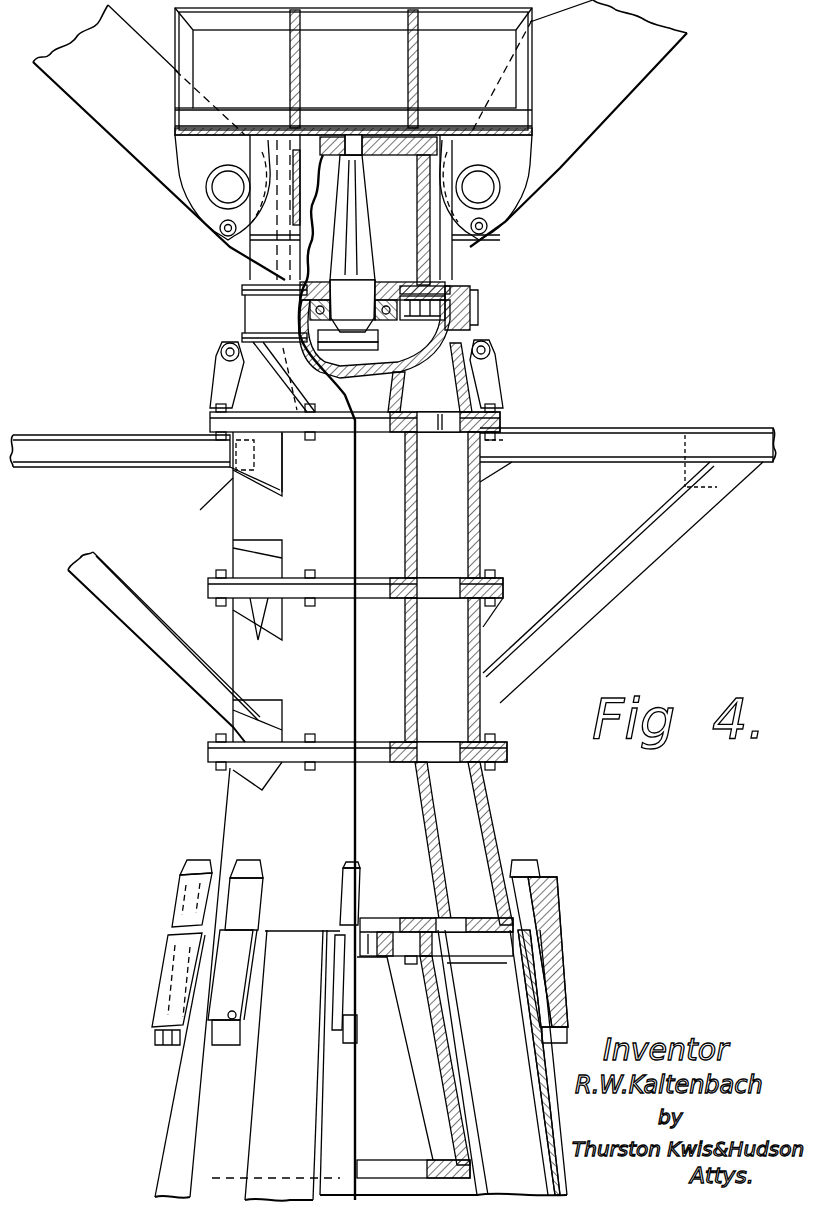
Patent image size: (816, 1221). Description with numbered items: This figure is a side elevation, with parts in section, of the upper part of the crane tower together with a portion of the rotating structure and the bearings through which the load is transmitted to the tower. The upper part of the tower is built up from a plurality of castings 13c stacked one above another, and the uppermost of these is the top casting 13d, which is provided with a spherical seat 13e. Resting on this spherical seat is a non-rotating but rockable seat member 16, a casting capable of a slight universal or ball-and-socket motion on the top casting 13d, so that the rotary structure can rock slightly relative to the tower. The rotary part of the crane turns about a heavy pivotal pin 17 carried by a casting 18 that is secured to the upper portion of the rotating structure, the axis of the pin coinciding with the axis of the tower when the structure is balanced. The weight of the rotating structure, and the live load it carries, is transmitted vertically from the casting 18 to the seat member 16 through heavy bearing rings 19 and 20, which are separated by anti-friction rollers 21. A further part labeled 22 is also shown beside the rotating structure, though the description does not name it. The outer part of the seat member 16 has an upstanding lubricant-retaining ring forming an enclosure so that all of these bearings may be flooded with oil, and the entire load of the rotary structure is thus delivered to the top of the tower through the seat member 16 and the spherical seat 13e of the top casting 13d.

The castings 13c is at (481, 498).
The top casting 13d is at (482, 366).
The spherical seat 13e is at (374, 341).
The seat member 16 is at (480, 330).
The pivotal pin 17 is at (365, 222).
The casting 18 is at (432, 263).
The bearing ring 19 is at (412, 285).
The bearing ring 20 is at (448, 318).
The anti-friction rollers 21 is at (470, 297).
The bracket 22 is at (256, 316).